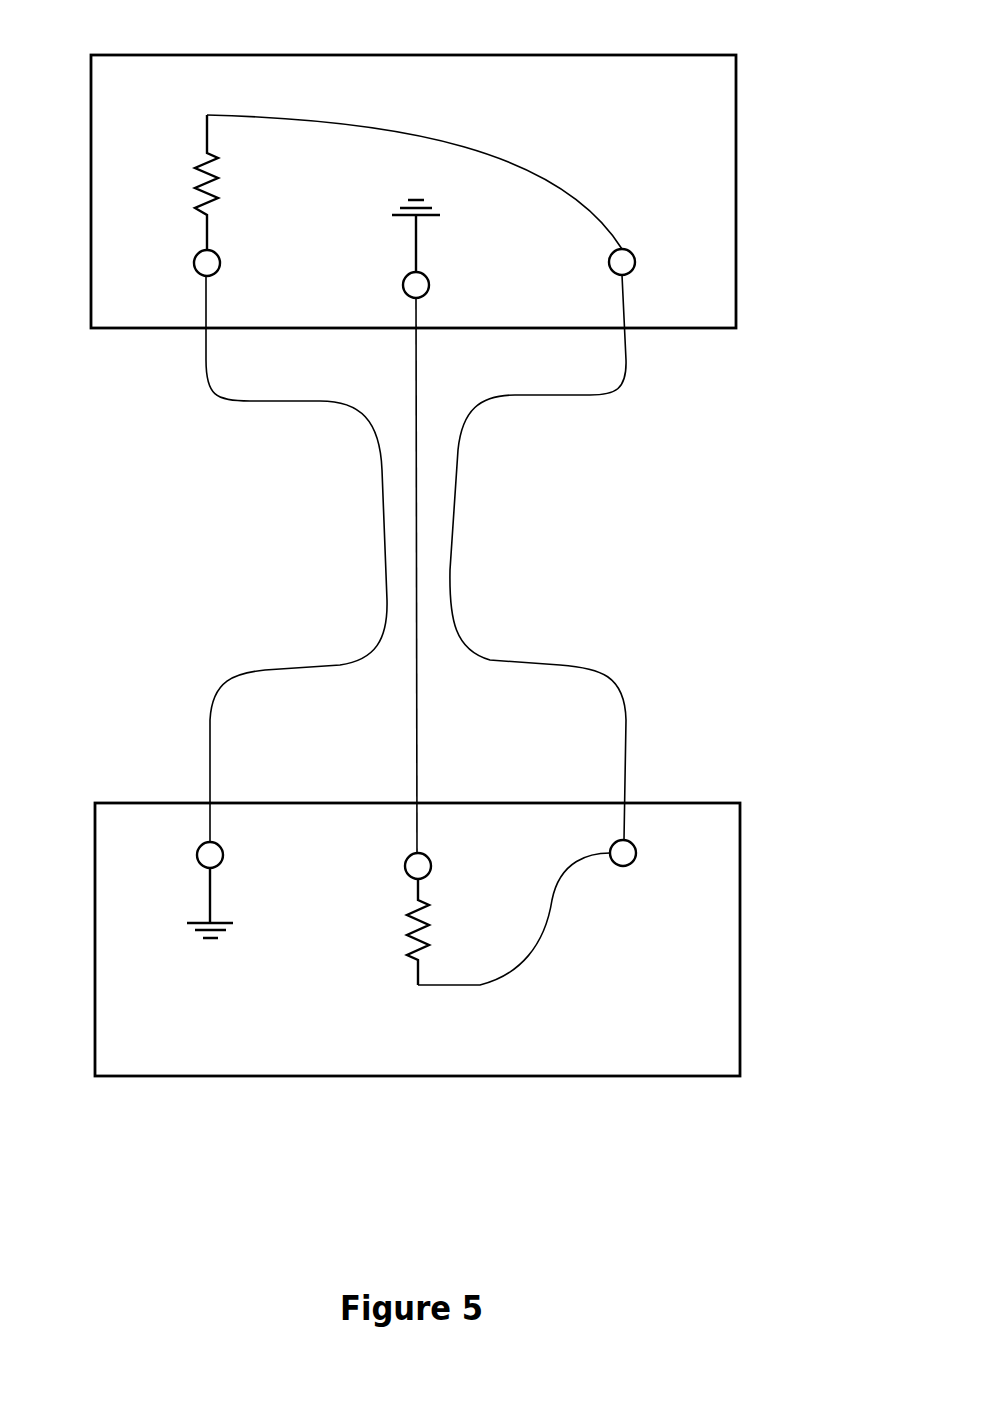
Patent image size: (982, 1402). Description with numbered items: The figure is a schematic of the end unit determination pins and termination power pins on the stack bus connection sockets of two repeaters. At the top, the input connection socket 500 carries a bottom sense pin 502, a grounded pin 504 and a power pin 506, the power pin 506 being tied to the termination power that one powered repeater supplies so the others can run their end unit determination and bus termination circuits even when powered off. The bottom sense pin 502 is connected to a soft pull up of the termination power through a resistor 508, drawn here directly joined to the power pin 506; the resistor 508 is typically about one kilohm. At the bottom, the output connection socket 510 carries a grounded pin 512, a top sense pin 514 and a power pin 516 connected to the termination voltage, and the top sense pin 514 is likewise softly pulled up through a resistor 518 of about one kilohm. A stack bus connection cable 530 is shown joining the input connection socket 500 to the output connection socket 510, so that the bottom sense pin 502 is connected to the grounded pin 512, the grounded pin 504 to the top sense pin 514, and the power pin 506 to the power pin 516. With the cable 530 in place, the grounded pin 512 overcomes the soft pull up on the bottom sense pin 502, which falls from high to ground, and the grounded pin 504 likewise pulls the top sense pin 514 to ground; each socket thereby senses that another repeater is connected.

The input connection socket 500 is at (243, 50).
The bottom sense pin 502 is at (243, 249).
The grounded pin 504 is at (430, 282).
The power pin 506 is at (632, 247).
The resistor 508 is at (218, 172).
The output connection socket 510 is at (768, 818).
The grounded pin 512 is at (224, 850).
The top sense pin 514 is at (432, 864).
The power pin 516 is at (636, 850).
The resistor 518 is at (432, 940).
The stack bus connection cable 530 is at (453, 520).